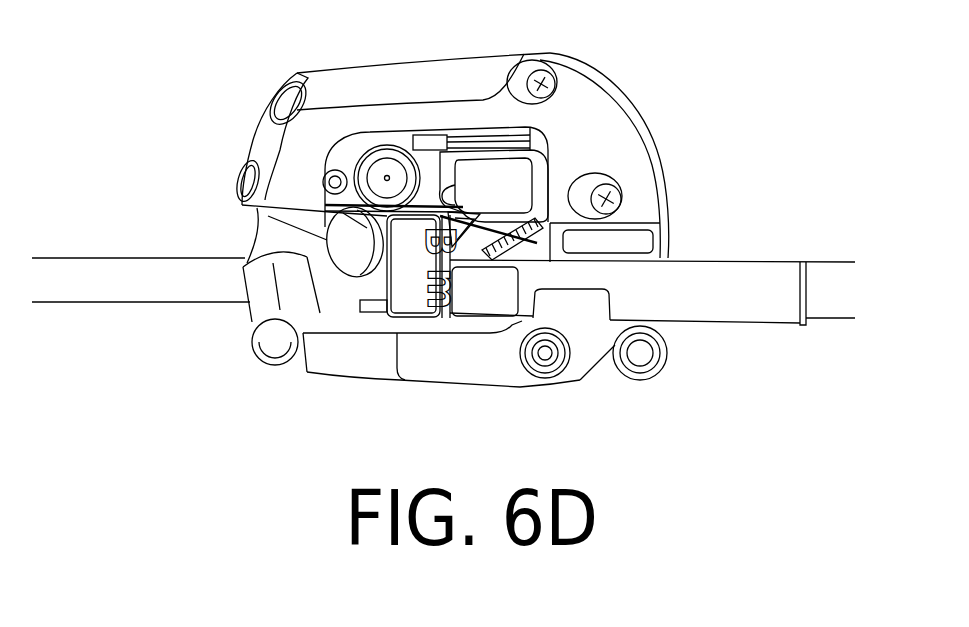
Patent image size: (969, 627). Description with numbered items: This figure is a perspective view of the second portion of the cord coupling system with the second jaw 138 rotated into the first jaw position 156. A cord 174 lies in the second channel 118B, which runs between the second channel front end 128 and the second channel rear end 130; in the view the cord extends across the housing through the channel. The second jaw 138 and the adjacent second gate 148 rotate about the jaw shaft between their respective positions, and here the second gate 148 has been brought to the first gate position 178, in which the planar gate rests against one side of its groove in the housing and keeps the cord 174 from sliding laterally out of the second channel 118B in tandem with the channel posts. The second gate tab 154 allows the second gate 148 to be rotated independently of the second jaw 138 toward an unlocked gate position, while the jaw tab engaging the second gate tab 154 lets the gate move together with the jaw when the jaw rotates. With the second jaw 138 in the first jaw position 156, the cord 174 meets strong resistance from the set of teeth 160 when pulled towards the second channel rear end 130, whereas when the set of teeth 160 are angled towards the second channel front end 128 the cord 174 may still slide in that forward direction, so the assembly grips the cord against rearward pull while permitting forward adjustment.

The first gate position 178 is at (223, 53).
The first jaw position 156 is at (217, 87).
The second channel front end 128 is at (233, 213).
The second jaw 138 is at (516, 219).
The second channel rear end 130 is at (672, 236).
The cord 174 is at (708, 295).
The second gate tab 154 is at (333, 240).
The second gate 148 is at (378, 287).
The second channel 118B is at (352, 320).
The set of teeth 160 is at (493, 247).